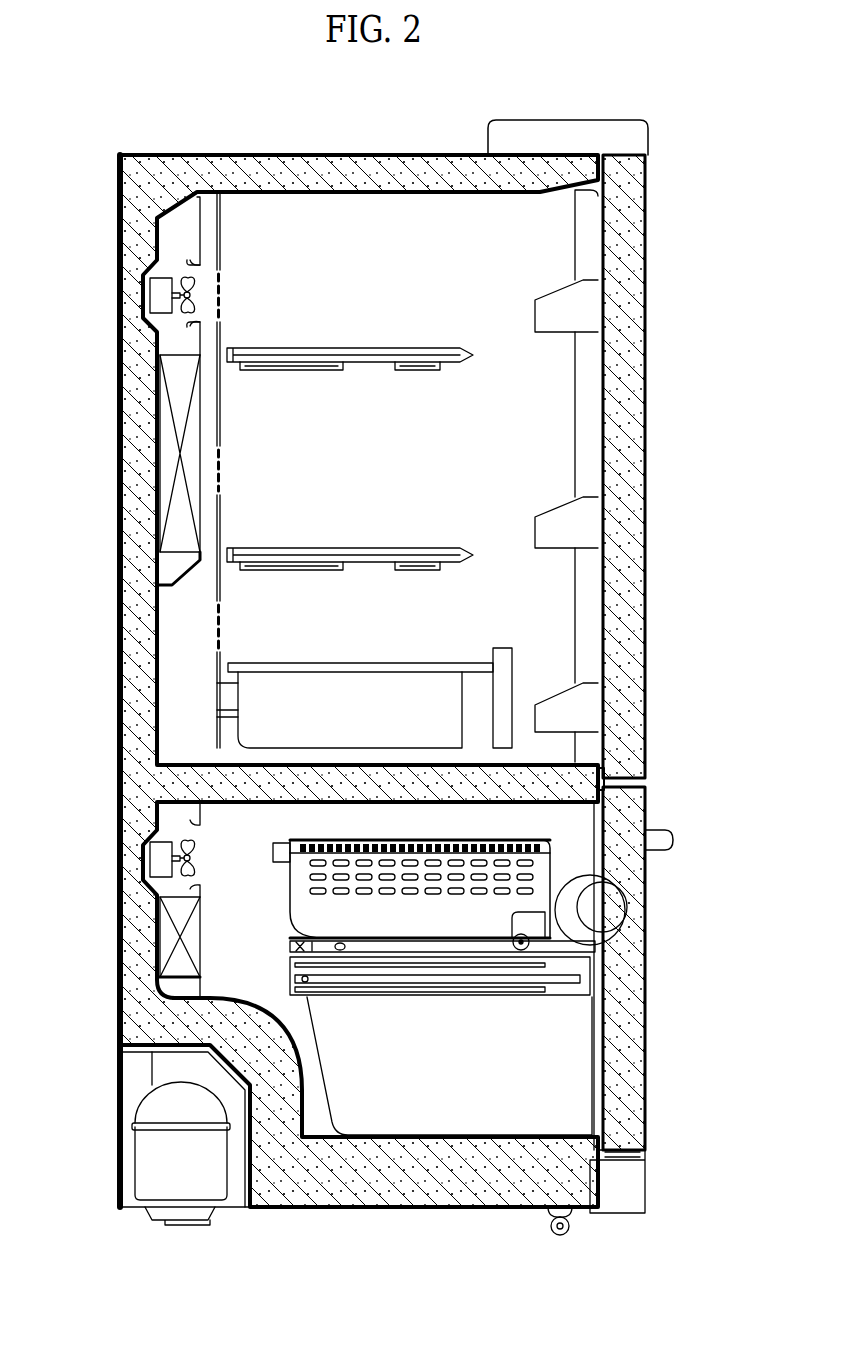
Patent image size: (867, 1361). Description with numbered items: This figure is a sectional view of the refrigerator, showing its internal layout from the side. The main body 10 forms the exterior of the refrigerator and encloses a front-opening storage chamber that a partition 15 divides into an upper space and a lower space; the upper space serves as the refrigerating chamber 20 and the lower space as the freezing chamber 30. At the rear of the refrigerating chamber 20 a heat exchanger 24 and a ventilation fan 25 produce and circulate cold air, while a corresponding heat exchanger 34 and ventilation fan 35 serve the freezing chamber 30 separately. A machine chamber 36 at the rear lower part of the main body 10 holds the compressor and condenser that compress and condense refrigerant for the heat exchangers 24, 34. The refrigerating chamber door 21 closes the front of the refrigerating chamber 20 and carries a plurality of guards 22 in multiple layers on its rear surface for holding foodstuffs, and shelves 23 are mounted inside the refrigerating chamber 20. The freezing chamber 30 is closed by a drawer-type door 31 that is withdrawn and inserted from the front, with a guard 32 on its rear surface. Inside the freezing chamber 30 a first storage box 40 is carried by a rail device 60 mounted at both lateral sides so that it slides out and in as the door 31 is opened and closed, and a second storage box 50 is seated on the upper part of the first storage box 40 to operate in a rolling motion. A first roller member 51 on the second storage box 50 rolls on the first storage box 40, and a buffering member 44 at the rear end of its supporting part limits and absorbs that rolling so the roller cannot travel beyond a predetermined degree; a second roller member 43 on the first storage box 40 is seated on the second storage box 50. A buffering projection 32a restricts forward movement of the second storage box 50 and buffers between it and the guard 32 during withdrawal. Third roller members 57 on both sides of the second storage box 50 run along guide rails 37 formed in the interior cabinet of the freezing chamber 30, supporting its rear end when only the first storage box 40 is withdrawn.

The main body 10 is at (120, 192).
The partition 15 is at (606, 779).
The refrigerating chamber 20 is at (399, 478).
The refrigerating chamber door 21 is at (645, 378).
The guards 22 is at (592, 294).
The shelves 23 is at (440, 347).
The heat exchanger 24 is at (160, 448).
The ventilation fan 25 is at (150, 298).
The freezing chamber 30 is at (256, 979).
The freezing chamber door 31 is at (640, 975).
The guard 32 is at (577, 906).
The buffering projection 32a is at (597, 931).
The heat exchanger 34 is at (165, 937).
The ventilation fan 35 is at (158, 856).
The machine chamber 36 is at (135, 1076).
The guide rails 37 is at (273, 852).
The first storage box 40 is at (578, 1060).
The second roller member 43 is at (332, 936).
The buffering member 44 is at (332, 946).
The second storage box 50 is at (552, 867).
The first roller member 51 is at (512, 916).
The third roller member 57 is at (297, 862).
The rail device 60 is at (424, 998).